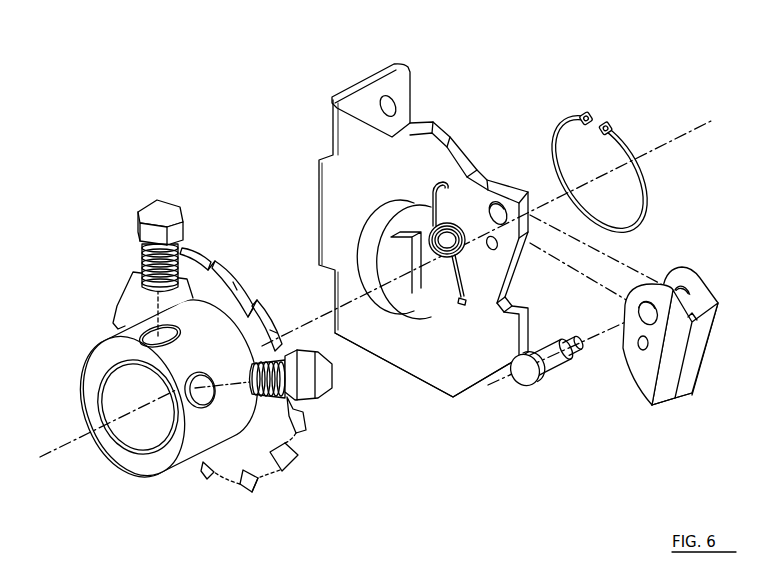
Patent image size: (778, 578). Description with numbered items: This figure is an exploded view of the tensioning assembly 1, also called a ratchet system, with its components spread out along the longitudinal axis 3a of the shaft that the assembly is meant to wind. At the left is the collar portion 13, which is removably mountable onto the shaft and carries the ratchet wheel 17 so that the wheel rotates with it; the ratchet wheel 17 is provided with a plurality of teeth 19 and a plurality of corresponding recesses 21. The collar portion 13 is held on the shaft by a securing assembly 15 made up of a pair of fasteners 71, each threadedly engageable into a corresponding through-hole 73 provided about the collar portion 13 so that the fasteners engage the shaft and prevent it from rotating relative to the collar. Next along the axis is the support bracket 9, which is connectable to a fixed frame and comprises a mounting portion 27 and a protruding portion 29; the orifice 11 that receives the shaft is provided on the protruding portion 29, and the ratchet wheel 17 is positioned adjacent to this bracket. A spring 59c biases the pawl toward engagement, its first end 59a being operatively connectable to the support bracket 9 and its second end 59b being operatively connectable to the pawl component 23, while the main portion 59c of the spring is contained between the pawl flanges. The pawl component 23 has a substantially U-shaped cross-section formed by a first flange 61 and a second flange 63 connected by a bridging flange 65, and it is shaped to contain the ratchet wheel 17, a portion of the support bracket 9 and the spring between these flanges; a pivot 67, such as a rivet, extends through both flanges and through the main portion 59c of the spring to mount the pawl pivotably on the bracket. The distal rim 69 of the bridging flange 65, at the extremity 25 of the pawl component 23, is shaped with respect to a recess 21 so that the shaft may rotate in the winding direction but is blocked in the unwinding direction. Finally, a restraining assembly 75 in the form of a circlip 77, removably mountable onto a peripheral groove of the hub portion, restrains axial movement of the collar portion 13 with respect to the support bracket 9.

The tensioning assembly 1 is at (169, 84).
The longitudinal axis 3a is at (44, 458).
The support bracket 9 is at (423, 229).
The orifice 11 is at (422, 315).
The collar portion 13 is at (161, 392).
The securing assembly 15 is at (121, 217).
The ratchet wheel 17 is at (258, 381).
The teeth 19 is at (302, 435).
The recesses 21 is at (260, 487).
The pawl component 23 is at (690, 337).
The extremity 25 is at (658, 423).
The mounting portion 27 is at (368, 69).
The protruding portion 29 is at (476, 373).
The first end 59a is at (455, 193).
The second end 59b is at (468, 298).
The main portion 59c is at (471, 255).
The first flange 61 is at (642, 375).
The second flange 63 is at (709, 282).
The bridging flange 65 is at (695, 358).
The pivot 67 is at (558, 382).
The distal rim 69 is at (680, 404).
The fastener 71 is at (190, 228).
The through-hole 73 is at (183, 334).
The restraining assembly 75 is at (595, 123).
The circlip 77 is at (617, 144).